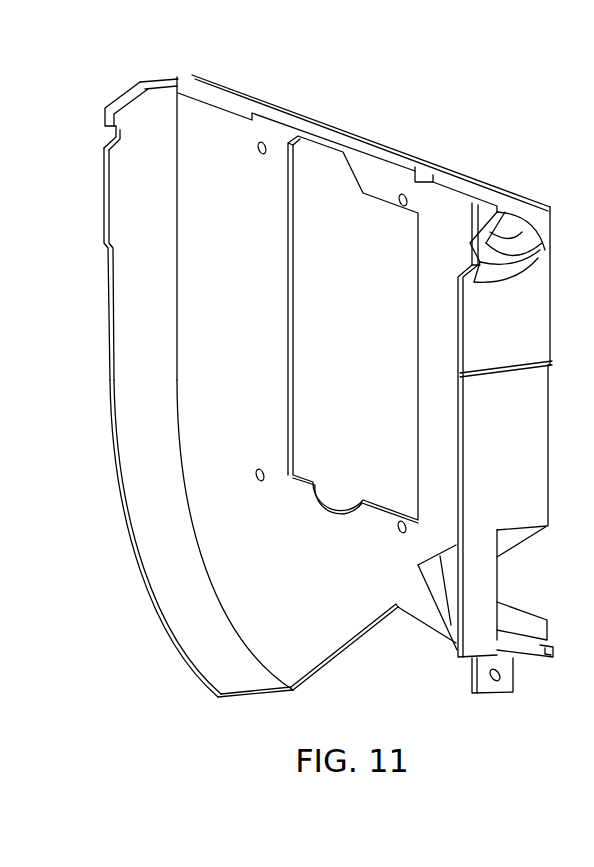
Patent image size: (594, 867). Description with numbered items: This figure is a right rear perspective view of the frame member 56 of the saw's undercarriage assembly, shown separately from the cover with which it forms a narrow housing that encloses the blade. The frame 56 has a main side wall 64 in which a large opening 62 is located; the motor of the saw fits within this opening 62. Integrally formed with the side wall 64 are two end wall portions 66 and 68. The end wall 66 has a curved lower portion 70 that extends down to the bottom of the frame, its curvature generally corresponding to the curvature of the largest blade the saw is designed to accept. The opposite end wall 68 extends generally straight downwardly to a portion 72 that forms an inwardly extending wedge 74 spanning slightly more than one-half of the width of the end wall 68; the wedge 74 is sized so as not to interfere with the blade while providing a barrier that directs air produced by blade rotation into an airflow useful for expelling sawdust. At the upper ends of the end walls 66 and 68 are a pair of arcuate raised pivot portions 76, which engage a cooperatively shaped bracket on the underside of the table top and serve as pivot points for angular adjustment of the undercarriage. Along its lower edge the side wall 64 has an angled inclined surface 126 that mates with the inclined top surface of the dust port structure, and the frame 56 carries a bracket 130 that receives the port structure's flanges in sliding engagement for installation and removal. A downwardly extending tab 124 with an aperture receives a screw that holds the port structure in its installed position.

The frame member 56 is at (406, 106).
The opening 62 is at (294, 323).
The main side wall 64 is at (217, 150).
The end wall portion 66 is at (142, 190).
The end wall portion 68 is at (512, 332).
The curved lower portion 70 is at (193, 610).
The portion 72 is at (497, 572).
The wedge 74 is at (440, 577).
The arcuate raised pivot portion 76 is at (108, 107).
The downwardly extending tab 124 is at (497, 681).
The inclined surface 126 is at (357, 645).
The bracket 130 is at (550, 633).